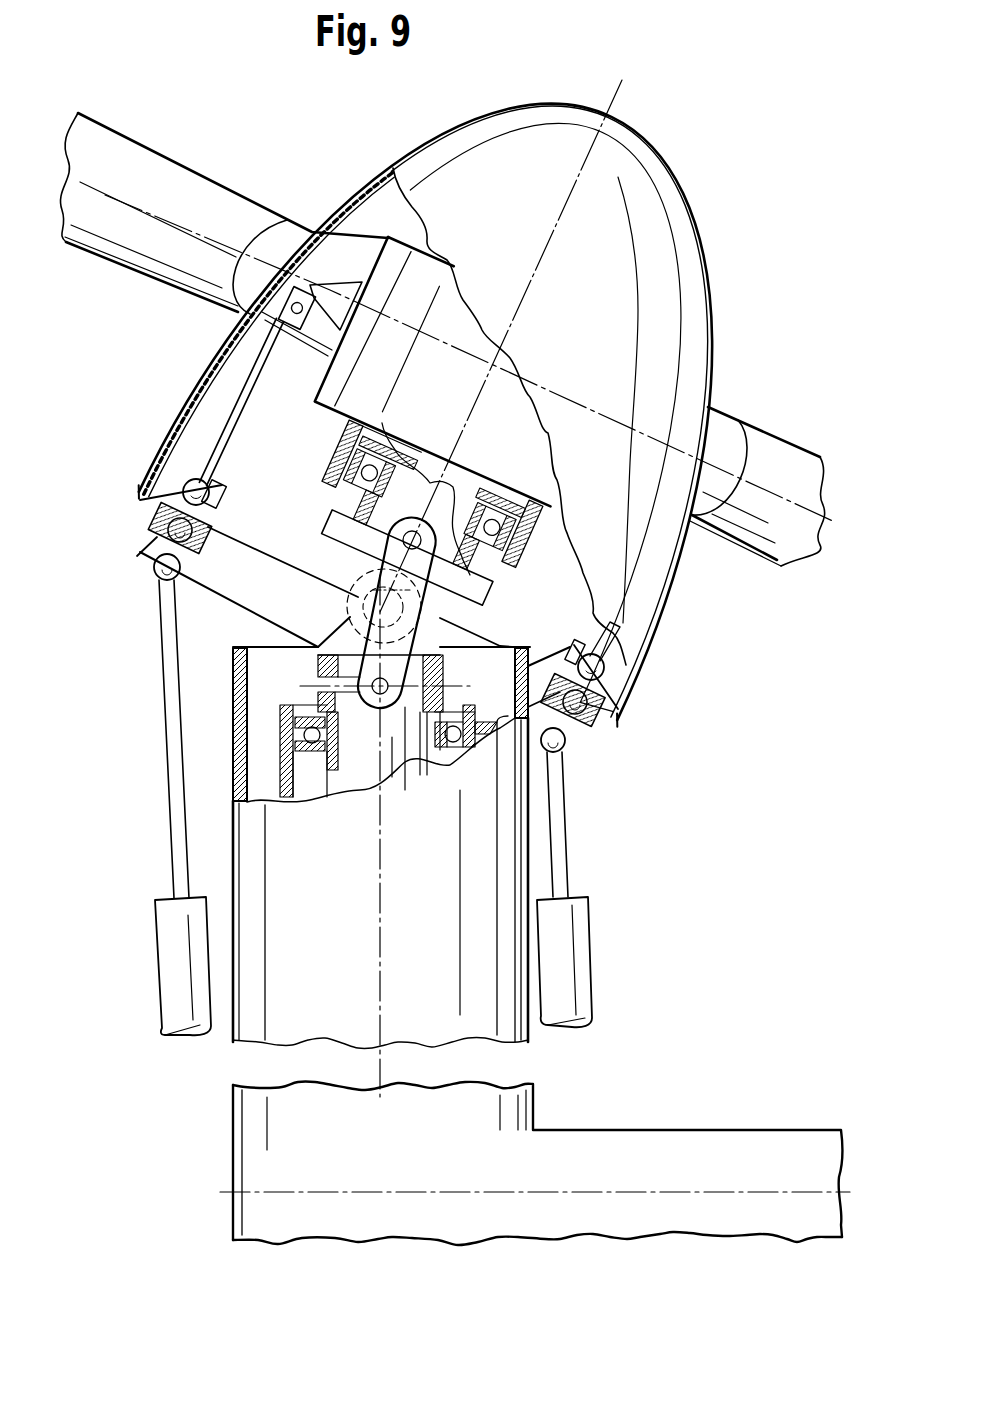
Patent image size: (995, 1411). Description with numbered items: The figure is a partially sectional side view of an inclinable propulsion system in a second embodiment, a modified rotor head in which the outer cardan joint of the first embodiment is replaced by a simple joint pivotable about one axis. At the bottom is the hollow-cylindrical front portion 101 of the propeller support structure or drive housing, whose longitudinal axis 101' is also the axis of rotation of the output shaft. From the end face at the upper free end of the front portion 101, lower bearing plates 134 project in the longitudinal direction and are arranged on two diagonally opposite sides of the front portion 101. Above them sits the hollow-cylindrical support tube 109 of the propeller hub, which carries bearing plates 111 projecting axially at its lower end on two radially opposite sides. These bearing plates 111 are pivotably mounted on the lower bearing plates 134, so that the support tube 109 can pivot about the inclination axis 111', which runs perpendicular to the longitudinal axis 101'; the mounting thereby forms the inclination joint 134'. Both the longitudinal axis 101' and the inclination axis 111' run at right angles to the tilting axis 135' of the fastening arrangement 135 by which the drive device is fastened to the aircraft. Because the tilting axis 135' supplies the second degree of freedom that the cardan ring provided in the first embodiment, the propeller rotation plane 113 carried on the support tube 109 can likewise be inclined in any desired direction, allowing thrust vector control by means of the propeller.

The front portion of the propeller support structure or drive housing 101 is at (429, 860).
The longitudinal axis of the front portion 101' is at (388, 808).
The cylindrical support tube 109 is at (357, 440).
The bearing plates 111 is at (407, 515).
The inclination axis 111' is at (351, 801).
The propeller rotation plane 113 is at (183, 221).
The lower bearing plates 134 is at (247, 467).
The inclination joint 134' is at (530, 670).
The fastening arrangement 135 is at (538, 1148).
The tilting axis 135' is at (535, 1123).